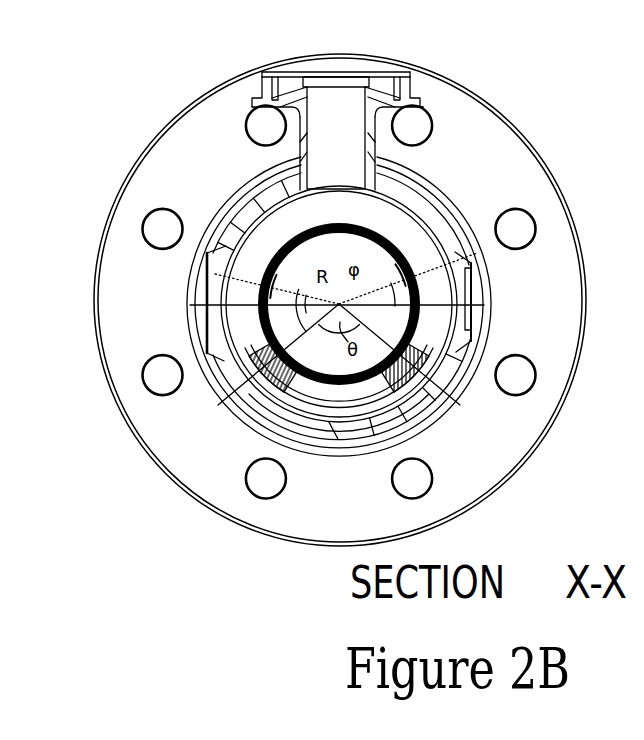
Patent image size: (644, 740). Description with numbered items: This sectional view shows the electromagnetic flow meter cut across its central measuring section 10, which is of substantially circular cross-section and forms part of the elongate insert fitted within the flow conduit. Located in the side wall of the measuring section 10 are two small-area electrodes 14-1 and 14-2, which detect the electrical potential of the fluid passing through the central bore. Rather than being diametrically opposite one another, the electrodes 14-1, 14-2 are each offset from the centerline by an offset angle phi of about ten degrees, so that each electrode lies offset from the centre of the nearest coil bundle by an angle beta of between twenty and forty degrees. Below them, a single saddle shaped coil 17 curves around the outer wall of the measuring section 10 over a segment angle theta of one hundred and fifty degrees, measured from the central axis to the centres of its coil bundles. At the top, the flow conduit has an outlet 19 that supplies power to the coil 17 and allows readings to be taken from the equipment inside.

The central measuring section 10 is at (336, 223).
The electrode 14-1 is at (274, 285).
The electrode 14-2 is at (405, 275).
The saddle shaped coil 17 is at (431, 353).
The outlet 19 is at (410, 74).